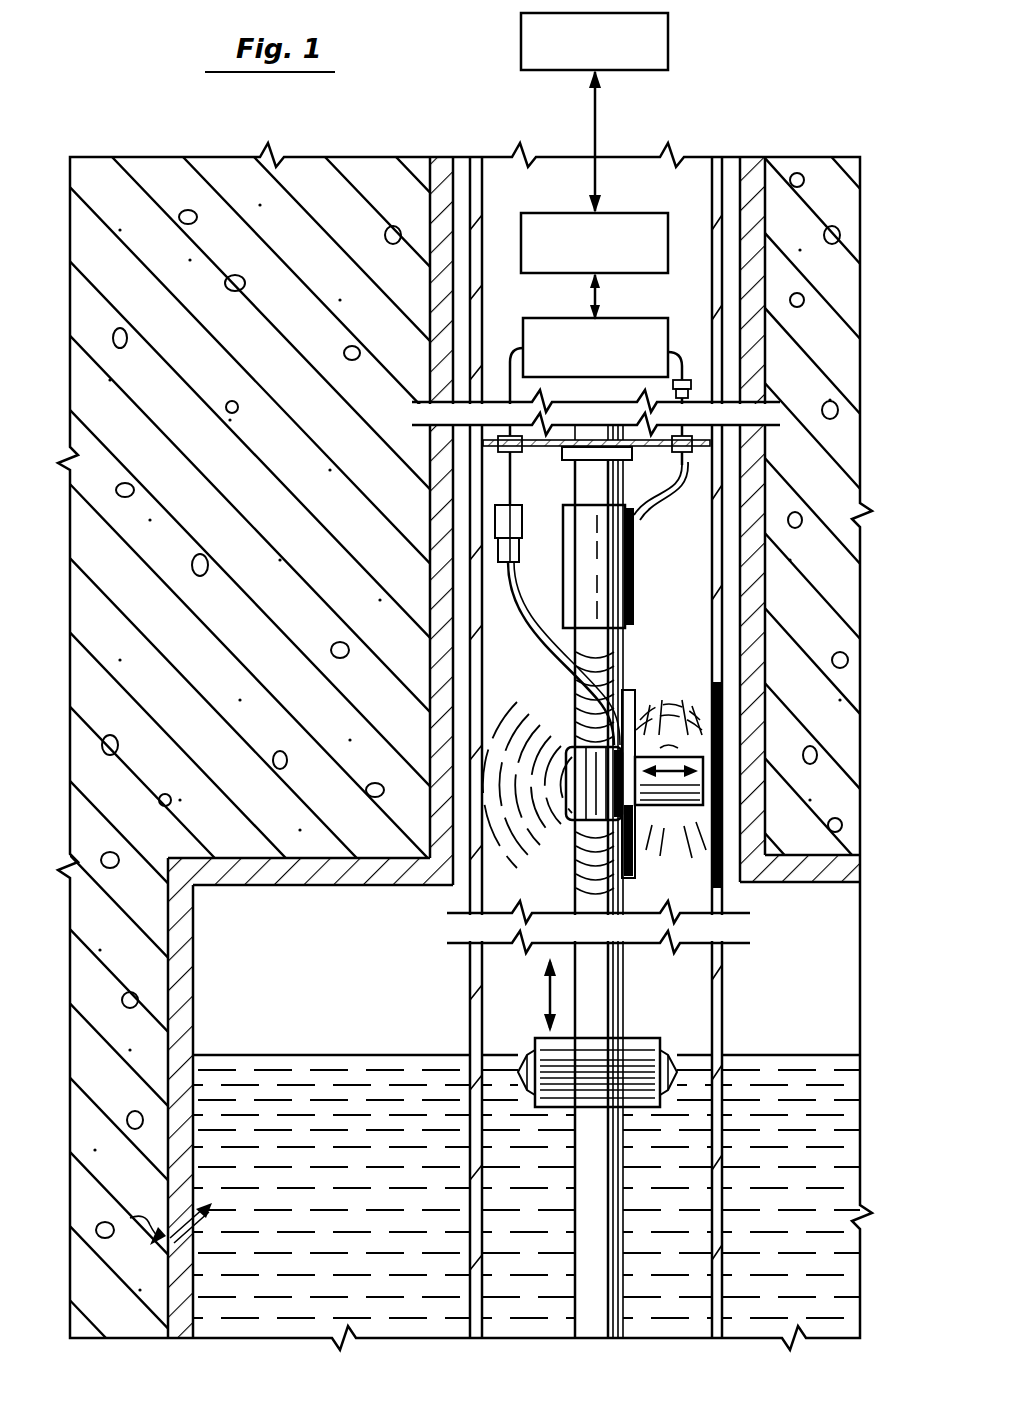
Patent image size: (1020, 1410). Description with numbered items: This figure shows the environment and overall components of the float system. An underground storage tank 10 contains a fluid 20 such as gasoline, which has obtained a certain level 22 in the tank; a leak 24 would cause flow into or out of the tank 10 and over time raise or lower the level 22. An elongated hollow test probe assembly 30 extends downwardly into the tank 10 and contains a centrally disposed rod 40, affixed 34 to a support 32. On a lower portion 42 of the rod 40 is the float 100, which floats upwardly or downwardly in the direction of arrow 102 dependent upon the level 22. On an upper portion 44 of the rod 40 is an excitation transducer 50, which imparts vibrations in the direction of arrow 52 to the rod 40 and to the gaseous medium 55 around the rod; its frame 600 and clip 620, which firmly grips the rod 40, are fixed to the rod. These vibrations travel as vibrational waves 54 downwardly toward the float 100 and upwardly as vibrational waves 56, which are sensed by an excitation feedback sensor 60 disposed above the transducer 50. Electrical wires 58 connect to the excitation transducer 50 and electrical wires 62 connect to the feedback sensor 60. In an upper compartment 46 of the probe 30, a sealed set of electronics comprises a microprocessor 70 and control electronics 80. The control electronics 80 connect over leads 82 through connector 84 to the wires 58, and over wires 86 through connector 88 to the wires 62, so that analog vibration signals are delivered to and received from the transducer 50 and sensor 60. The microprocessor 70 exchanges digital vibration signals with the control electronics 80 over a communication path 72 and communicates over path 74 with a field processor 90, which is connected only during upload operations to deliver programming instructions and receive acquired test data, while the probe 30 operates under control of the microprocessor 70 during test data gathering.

The storage tank 10 is at (344, 956).
The fluid 20 is at (354, 1179).
The level 22 is at (288, 1054).
The leak 24 is at (153, 1223).
The test probe assembly 30 is at (460, 568).
The support 32 is at (726, 462).
The affixing 34 is at (572, 460).
The rod 40 is at (606, 992).
The lower portion 42 is at (622, 1220).
The upper portion 44 is at (586, 703).
The upper compartment 46 is at (702, 254).
The excitation transducer 50 is at (650, 712).
The arrow 52 is at (676, 805).
The vibrational waves 54 is at (584, 862).
The gaseous medium 55 is at (722, 706).
The vibrational waves 56 is at (618, 664).
The electrical wires 58 is at (548, 706).
The excitation feedback sensor 60 is at (612, 578).
The electrical wires 62 is at (656, 470).
The microprocessor 70 is at (552, 212).
The communication path 72 is at (590, 296).
The path 74 is at (598, 98).
The control electronics 80 is at (628, 318).
The leads 82 is at (502, 372).
The connector 84 is at (524, 532).
The wires 86 is at (684, 355).
The connector 88 is at (692, 386).
The field processor 90 is at (668, 40).
The float 100 is at (632, 1048).
The arrow 102 is at (546, 1004).
The frame 600 is at (632, 848).
The clip 620 is at (568, 764).